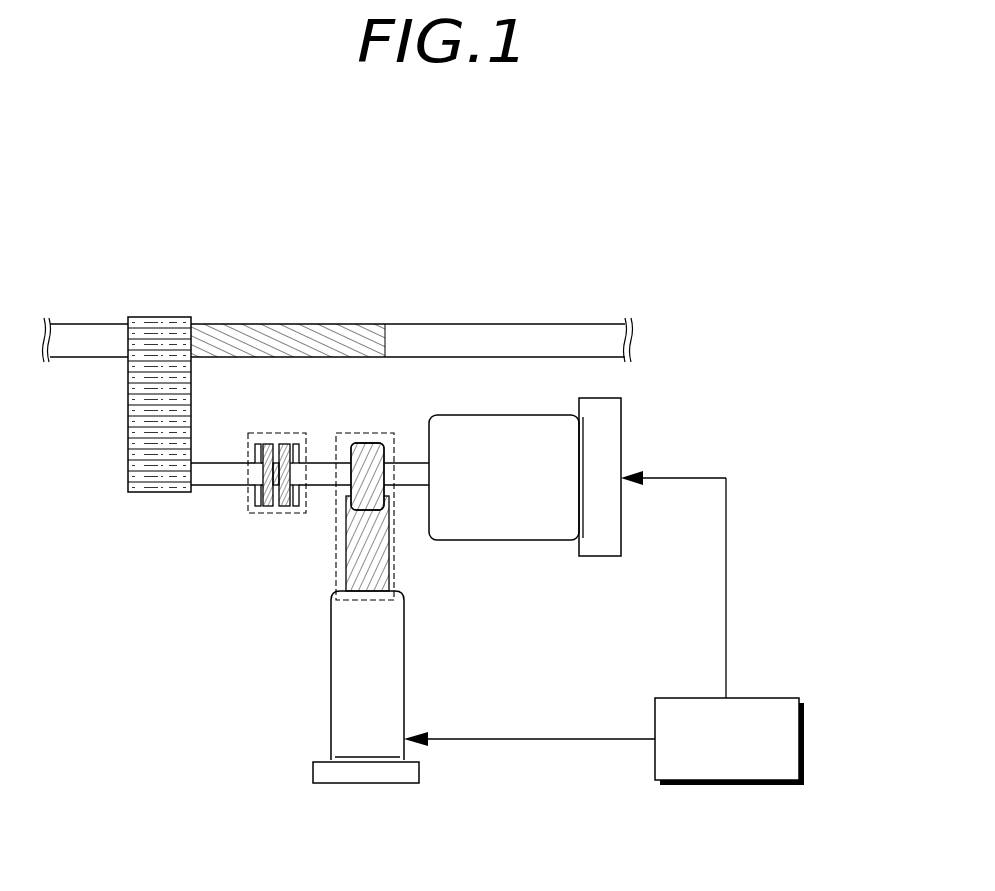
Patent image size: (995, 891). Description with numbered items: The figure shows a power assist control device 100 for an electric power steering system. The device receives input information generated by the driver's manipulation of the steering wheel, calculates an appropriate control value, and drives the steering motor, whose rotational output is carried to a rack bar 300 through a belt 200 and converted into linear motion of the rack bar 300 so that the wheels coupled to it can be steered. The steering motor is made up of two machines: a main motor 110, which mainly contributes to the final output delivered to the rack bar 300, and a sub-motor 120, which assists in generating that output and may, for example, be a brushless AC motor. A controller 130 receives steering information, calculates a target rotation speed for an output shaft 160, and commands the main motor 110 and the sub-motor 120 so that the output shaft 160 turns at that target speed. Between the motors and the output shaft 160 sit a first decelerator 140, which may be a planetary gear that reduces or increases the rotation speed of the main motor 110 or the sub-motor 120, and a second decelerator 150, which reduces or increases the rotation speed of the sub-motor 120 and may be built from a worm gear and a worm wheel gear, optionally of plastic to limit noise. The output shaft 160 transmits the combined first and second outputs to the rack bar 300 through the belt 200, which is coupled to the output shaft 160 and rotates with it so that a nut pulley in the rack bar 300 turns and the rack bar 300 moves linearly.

The power assist control device 100 is at (234, 775).
The main motor 110 is at (622, 439).
The sub-motor 120 is at (367, 784).
The controller 130 is at (805, 739).
The first decelerator 140 is at (279, 515).
The second decelerator 150 is at (395, 570).
The output shaft 160 is at (210, 486).
The belt 200 is at (127, 452).
The rack bar 300 is at (83, 329).